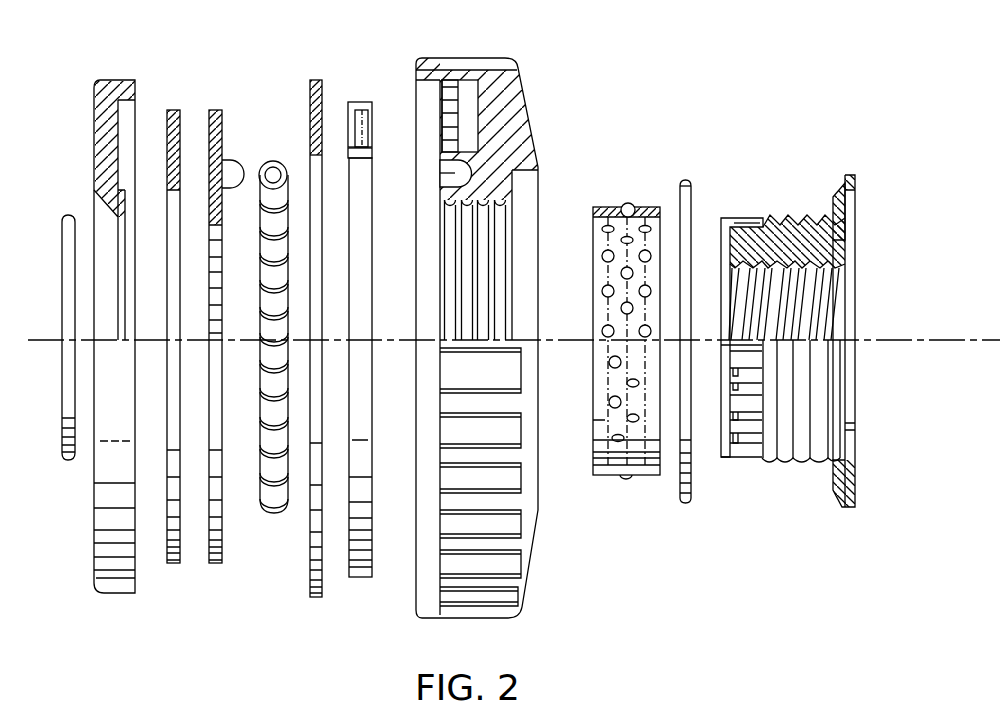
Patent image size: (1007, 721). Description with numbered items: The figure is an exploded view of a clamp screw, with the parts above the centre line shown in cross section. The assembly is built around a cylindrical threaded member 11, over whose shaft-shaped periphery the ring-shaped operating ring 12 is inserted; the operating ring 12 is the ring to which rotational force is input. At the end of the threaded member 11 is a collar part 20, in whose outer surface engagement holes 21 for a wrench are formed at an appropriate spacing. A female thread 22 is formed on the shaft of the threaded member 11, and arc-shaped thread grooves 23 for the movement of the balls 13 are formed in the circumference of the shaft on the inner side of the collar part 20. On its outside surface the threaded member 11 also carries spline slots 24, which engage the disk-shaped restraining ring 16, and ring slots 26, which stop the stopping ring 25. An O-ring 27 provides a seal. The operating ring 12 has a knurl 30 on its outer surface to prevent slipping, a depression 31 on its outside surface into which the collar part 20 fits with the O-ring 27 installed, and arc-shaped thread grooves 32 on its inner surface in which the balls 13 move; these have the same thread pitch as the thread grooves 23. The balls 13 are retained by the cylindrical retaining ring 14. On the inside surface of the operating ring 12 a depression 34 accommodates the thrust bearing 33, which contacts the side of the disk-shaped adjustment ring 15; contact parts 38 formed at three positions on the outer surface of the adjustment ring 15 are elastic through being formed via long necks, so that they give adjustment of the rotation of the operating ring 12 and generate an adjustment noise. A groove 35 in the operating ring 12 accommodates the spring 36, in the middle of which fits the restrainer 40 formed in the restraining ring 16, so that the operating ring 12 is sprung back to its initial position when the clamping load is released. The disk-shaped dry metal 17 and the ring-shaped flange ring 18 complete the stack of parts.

The threaded member 11 is at (804, 345).
The operating ring 12 is at (483, 315).
The balls 13 is at (632, 318).
The retaining ring 14 is at (606, 205).
The adjustment ring 15 is at (339, 305).
The restraining ring 16 is at (218, 110).
The dry metal 17 is at (173, 110).
The flange ring 18 is at (122, 80).
The collar part 20 is at (857, 180).
The engagement holes 21 is at (851, 213).
The female thread 22 is at (837, 283).
The thread grooves 23 is at (797, 217).
The spline slots 24 is at (753, 458).
The stopping ring 25 is at (62, 235).
The ring slots 26 is at (725, 453).
The O-ring 27 is at (692, 180).
The knurl 30 is at (513, 30).
The depression 31 is at (530, 187).
The thread grooves 32 is at (502, 220).
The thrust bearing 33 is at (360, 102).
The depression 34 is at (475, 110).
The groove 35 is at (448, 175).
The spring 36 is at (267, 163).
The contact parts 38 is at (317, 80).
The restrainer 40 is at (237, 160).